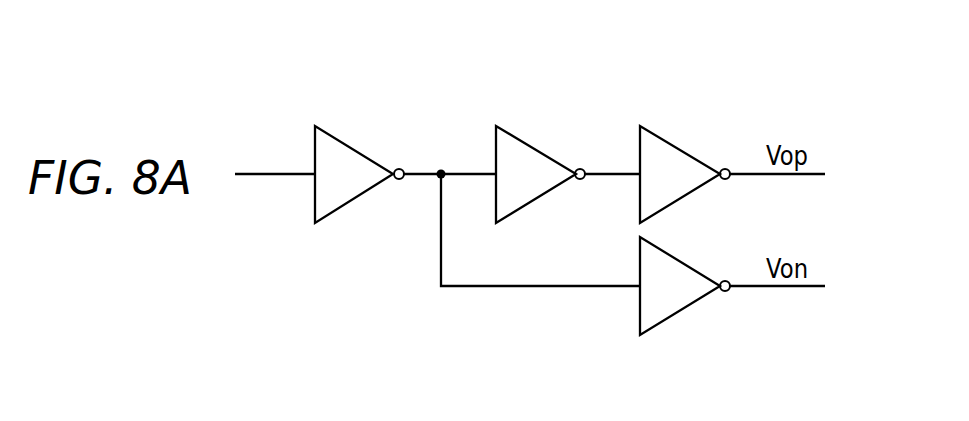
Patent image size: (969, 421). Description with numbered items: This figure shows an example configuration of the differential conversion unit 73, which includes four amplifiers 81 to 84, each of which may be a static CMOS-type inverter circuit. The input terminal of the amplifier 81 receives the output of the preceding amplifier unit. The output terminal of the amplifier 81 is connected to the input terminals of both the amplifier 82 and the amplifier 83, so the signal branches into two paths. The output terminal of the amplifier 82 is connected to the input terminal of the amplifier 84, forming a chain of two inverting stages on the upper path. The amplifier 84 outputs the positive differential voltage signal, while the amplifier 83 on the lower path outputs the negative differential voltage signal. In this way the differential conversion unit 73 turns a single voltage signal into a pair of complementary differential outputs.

The differential conversion unit 73 is at (744, 72).
The amplifier 81 is at (359, 152).
The amplifier 82 is at (539, 151).
The amplifier 83 is at (684, 264).
The amplifier 84 is at (684, 151).